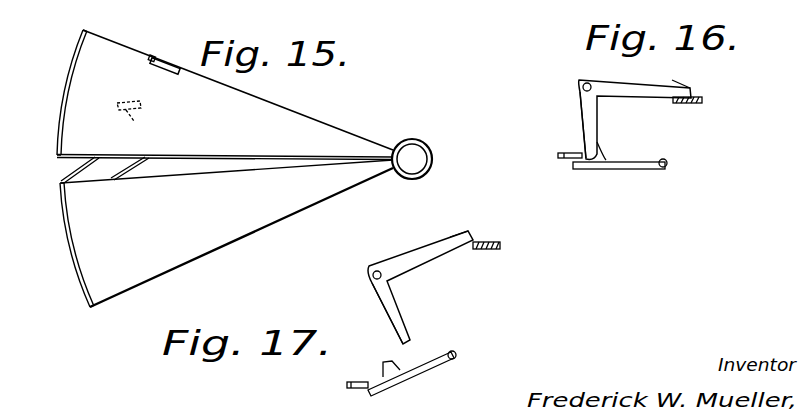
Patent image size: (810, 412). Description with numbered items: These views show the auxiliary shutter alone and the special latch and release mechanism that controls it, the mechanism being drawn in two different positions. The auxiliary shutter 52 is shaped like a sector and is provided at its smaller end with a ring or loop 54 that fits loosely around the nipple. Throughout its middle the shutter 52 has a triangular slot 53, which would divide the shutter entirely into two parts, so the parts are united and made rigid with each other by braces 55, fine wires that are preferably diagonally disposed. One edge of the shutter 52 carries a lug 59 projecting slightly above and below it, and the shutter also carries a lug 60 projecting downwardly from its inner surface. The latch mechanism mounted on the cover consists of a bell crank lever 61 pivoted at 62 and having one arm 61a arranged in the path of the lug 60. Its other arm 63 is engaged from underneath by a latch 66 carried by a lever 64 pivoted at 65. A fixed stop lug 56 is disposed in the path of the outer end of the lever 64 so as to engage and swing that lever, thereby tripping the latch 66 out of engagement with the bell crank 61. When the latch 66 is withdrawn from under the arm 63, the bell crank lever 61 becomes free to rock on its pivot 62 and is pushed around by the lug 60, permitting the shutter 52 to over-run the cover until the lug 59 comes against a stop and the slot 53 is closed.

In FIG. 15, the auxiliary shutter 52 is at (207, 247).
In FIG. 15, the triangular slot 53 is at (222, 166).
In FIG. 15, the ring or loop 54 is at (441, 137).
In FIG. 15, the braces 55 is at (115, 176).
In FIG. 16, the stop lug 56 is at (562, 152).
In FIG. 17, the stop lug 56 is at (350, 390).
In FIG. 15, the lug 59 is at (165, 73).
In FIG. 15, the lug 60 is at (141, 119).
In FIG. 16, the lug 60 is at (690, 105).
In FIG. 17, the lug 60 is at (485, 250).
In FIG. 16, the bell crank lever 61 is at (626, 90).
In FIG. 17, the bell crank lever 61 is at (402, 259).
In FIG. 16, the arm 61a is at (673, 84).
In FIG. 17, the arm 61a is at (455, 239).
In FIG. 16, the pivot 62 is at (583, 83).
In FIG. 17, the pivot 62 is at (371, 274).
In FIG. 16, the arm 63 is at (582, 112).
In FIG. 17, the arm 63 is at (407, 326).
In FIG. 16, the lever 64 is at (582, 170).
In FIG. 17, the lever 64 is at (380, 395).
In FIG. 16, the pivot 65 is at (665, 168).
In FIG. 17, the pivot 65 is at (460, 355).
In FIG. 16, the latch 66 is at (600, 160).
In FIG. 17, the latch 66 is at (394, 364).